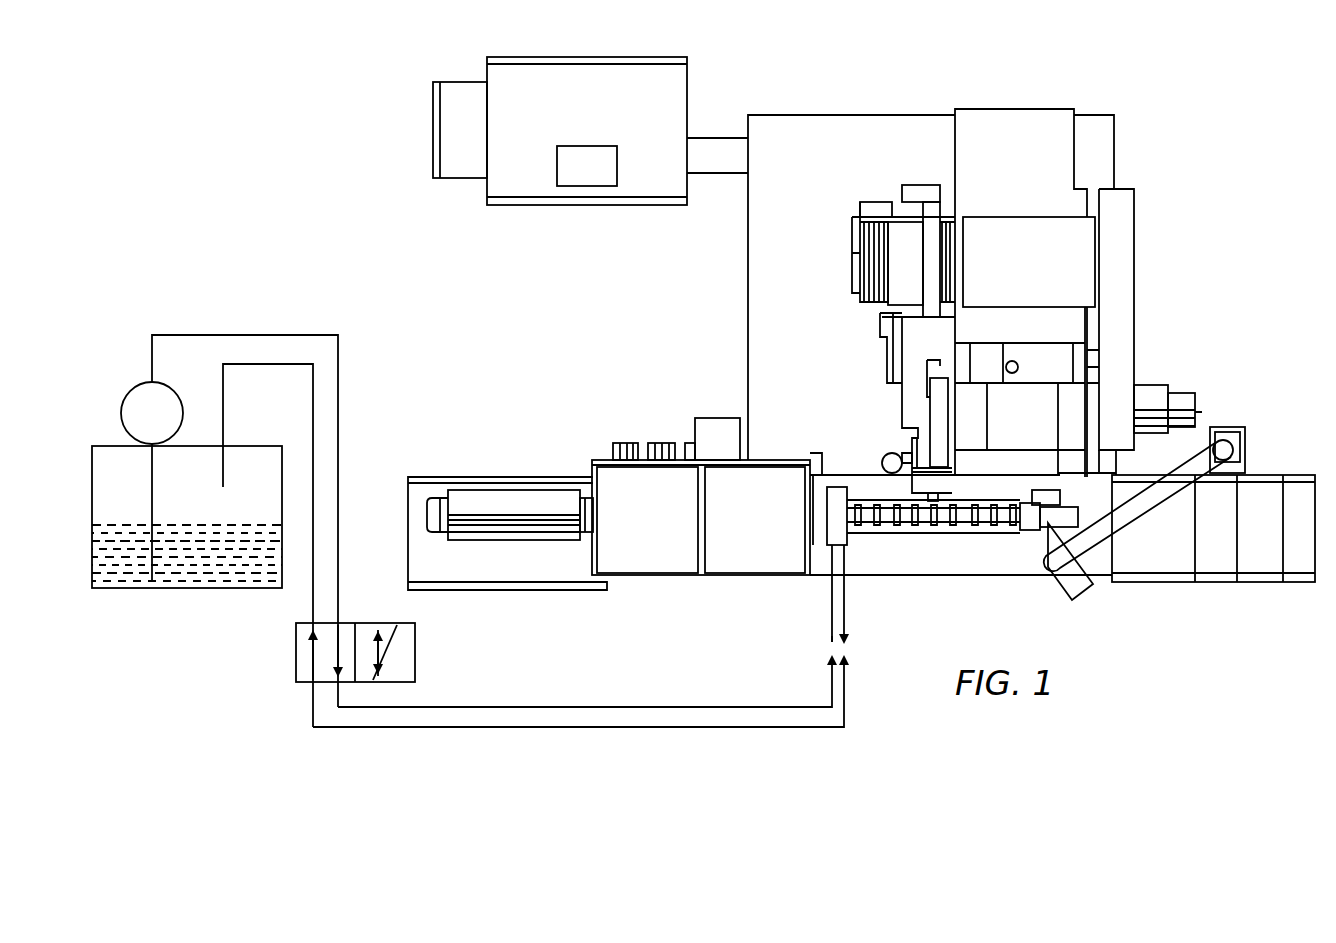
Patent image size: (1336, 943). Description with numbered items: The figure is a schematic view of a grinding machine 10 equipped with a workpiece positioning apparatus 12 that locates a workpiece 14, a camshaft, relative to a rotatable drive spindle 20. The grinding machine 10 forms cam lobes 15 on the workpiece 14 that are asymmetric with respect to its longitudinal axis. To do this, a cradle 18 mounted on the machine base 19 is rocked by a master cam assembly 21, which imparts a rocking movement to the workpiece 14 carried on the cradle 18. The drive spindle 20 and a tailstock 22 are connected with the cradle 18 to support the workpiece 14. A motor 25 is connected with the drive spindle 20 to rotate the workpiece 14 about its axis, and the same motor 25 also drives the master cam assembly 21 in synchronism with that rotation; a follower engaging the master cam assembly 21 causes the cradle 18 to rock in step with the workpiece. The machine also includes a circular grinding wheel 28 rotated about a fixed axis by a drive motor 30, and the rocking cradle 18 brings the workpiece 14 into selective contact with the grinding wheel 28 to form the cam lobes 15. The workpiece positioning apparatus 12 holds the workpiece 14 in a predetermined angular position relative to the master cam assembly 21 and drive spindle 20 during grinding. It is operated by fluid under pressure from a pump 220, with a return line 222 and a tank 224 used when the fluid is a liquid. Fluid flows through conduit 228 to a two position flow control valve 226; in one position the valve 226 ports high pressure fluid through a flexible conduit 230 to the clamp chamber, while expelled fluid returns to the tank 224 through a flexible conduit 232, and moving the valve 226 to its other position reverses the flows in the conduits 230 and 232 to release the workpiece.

The grinding machine 10 is at (1220, 254).
The workpiece positioning apparatus 12 is at (846, 537).
The workpiece 14 is at (964, 526).
The cam lobes 15 is at (974, 506).
The cradle 18 is at (905, 528).
The machine base 19 is at (1014, 576).
The drive spindle 20 is at (826, 494).
The master cam assembly 21 is at (747, 560).
The tailstock 22 is at (1046, 496).
The motor 25 is at (478, 538).
The grinding wheel 28 is at (928, 496).
The drive motor 30 is at (1022, 217).
The pump 220 is at (133, 390).
The return line 222 is at (254, 364).
The tank 224 is at (200, 589).
The two position flow control valve 226 is at (296, 684).
The conduit 228 is at (278, 334).
The flexible conduit 230 is at (634, 727).
The flexible conduit 232 is at (660, 707).